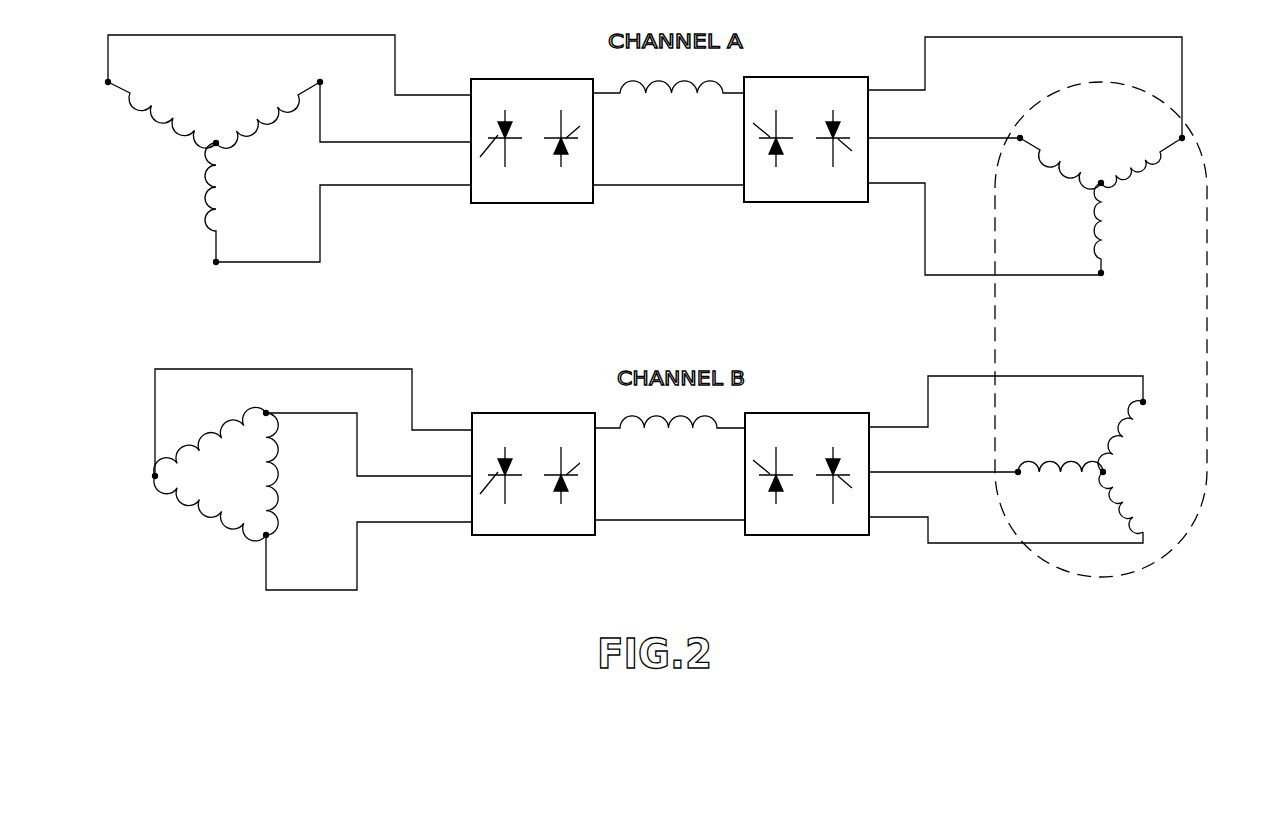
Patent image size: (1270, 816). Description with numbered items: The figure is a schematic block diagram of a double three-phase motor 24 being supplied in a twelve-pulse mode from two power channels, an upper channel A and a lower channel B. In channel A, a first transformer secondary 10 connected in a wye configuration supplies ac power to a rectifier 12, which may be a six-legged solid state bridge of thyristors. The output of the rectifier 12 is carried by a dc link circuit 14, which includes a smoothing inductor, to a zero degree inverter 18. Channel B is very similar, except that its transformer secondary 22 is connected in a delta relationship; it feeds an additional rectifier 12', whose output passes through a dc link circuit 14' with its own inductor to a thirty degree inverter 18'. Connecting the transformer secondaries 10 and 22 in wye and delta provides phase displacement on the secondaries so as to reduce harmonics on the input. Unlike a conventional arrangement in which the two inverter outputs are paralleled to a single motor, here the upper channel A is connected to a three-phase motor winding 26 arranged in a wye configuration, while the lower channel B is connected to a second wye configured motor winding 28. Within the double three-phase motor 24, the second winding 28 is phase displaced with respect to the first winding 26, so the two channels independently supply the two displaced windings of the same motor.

The first transformer secondary 10 is at (232, 91).
The rectifier 12 is at (534, 142).
The dc link circuit 14 is at (668, 133).
The zero degree inverter 18 is at (807, 137).
The transformer secondary 22 is at (236, 481).
The additional rectifier 12' is at (535, 472).
The dc link circuit 14' is at (670, 468).
The 30 degree inverter 18' is at (806, 472).
The double three-phase motor 24 is at (1208, 165).
The three-phase motor winding 26 is at (1114, 138).
The second wye configured motor winding 28 is at (1172, 476).